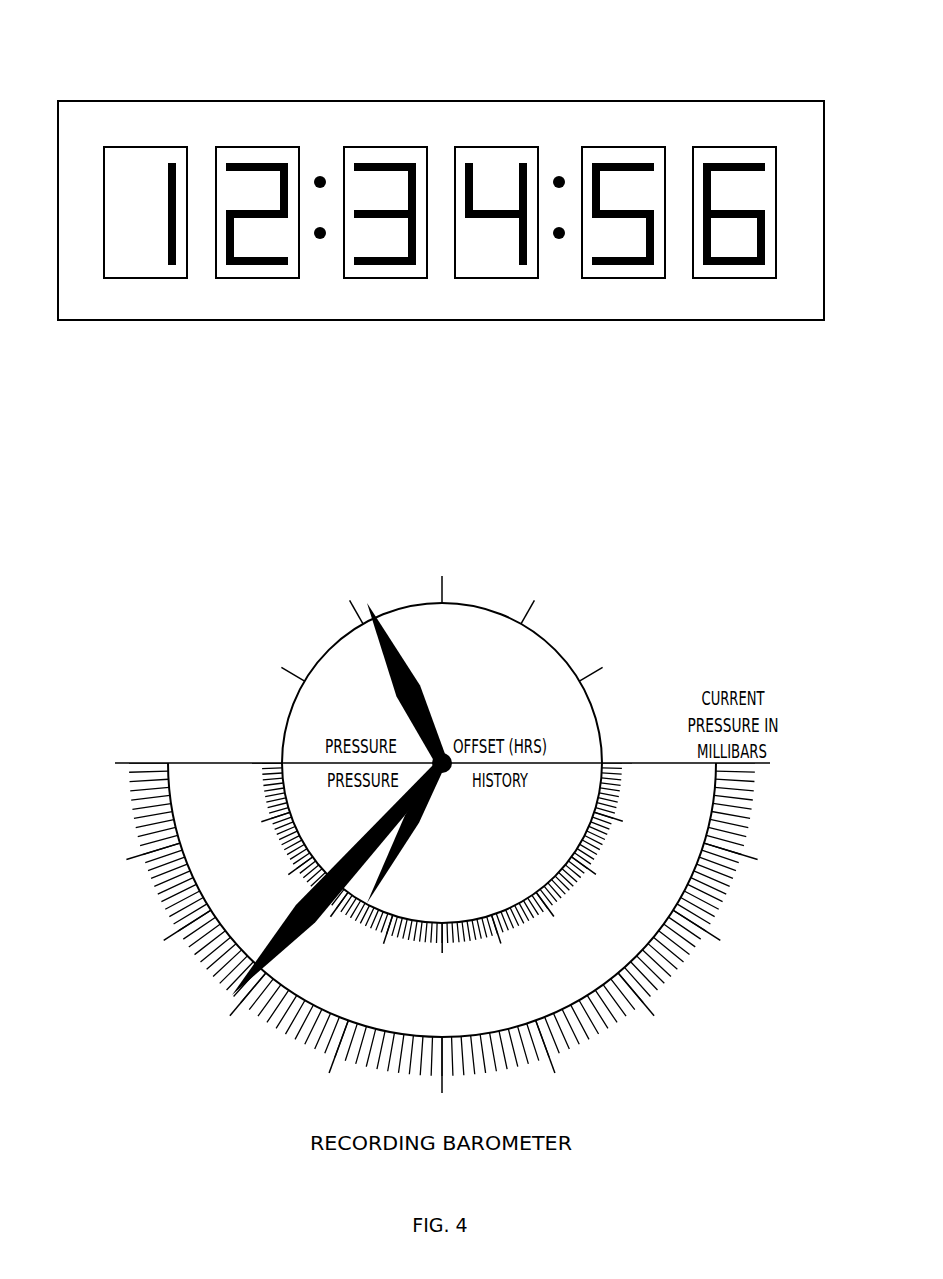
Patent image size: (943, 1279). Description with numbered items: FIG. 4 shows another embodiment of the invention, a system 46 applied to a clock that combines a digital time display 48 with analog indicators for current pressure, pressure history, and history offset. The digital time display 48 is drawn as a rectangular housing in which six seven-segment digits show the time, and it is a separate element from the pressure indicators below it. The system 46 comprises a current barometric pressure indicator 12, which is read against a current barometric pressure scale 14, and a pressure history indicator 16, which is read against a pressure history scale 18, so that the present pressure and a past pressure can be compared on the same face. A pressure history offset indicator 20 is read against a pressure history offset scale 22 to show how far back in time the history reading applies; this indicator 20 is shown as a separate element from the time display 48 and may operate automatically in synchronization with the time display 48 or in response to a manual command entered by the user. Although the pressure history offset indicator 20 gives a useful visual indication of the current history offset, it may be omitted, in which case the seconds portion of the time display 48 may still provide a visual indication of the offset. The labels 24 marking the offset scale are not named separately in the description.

The system 46 is at (82, 52).
The digital time display 48 is at (723, 320).
The current barometric pressure indicator 12 is at (280, 948).
The current barometric pressure scale 14 is at (715, 935).
The pressure history indicator 16 is at (388, 891).
The pressure history scale 18 is at (634, 763).
The pressure history offset indicator 20 is at (372, 600).
The pressure history offset scale 22 is at (538, 612).
The offset hour labels 24 is at (508, 585).